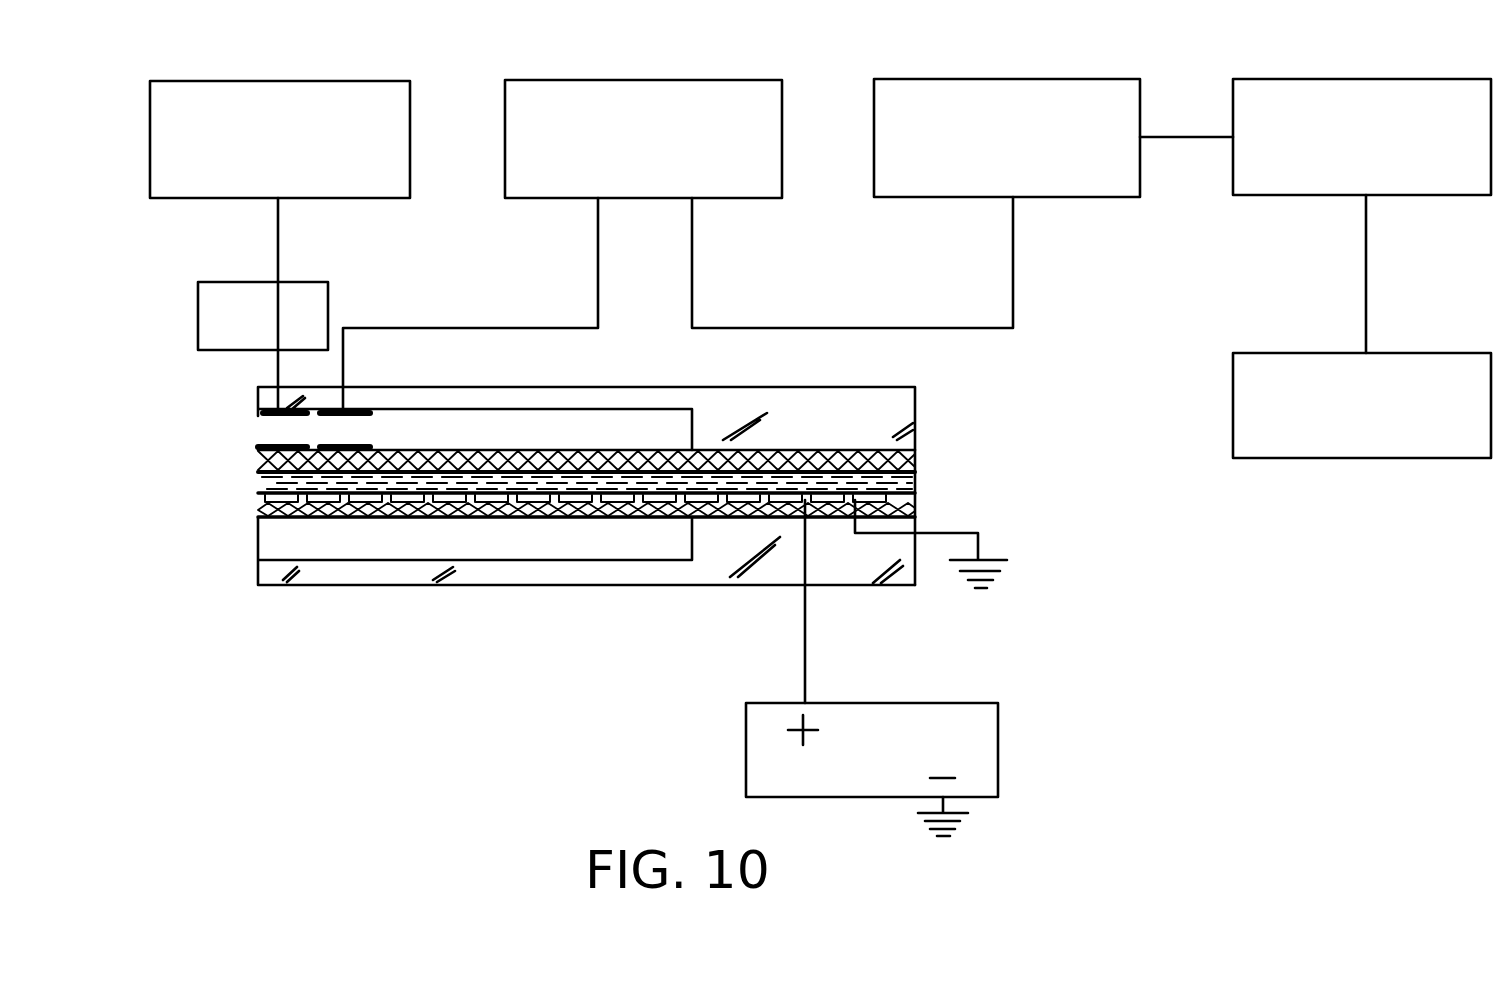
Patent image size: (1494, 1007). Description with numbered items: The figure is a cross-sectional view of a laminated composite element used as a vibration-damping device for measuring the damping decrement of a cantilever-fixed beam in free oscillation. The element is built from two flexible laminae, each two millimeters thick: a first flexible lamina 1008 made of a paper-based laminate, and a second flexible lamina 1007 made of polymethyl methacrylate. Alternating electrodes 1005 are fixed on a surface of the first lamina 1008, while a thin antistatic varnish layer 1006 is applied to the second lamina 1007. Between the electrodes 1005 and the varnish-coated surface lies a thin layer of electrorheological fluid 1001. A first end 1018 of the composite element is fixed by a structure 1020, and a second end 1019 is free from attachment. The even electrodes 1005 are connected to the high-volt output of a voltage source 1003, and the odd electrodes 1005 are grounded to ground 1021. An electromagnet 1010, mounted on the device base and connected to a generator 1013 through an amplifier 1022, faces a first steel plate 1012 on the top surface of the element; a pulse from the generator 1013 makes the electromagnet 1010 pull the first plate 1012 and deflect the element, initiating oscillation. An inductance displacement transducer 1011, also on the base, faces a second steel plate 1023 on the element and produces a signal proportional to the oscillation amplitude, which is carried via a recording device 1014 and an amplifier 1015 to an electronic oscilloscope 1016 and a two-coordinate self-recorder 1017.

The electrorheological fluid 1001 is at (542, 502).
The voltage source 1003 is at (880, 712).
The electrodes 1005 is at (586, 532).
The antistatic varnish layer 1006 is at (586, 439).
The second flexible lamina 1007 is at (586, 438).
The first flexible lamina 1008 is at (586, 527).
The electromagnet 1010 is at (270, 416).
The inductance displacement transducer 1011 is at (354, 417).
The first steel plate 1012 is at (272, 432).
The generator 1013 is at (258, 92).
The recording device 1014 is at (580, 95).
The amplifier 1015 is at (971, 90).
The electronic oscilloscope 1016 is at (1311, 90).
The two-coordinate self-recorder 1017 is at (1338, 325).
The first end 1018 is at (652, 486).
The second end 1019 is at (539, 551).
The structure 1020 is at (838, 587).
The ground 1021 is at (1000, 561).
The amplifier 1022 is at (230, 307).
The second steel plate 1023 is at (366, 447).